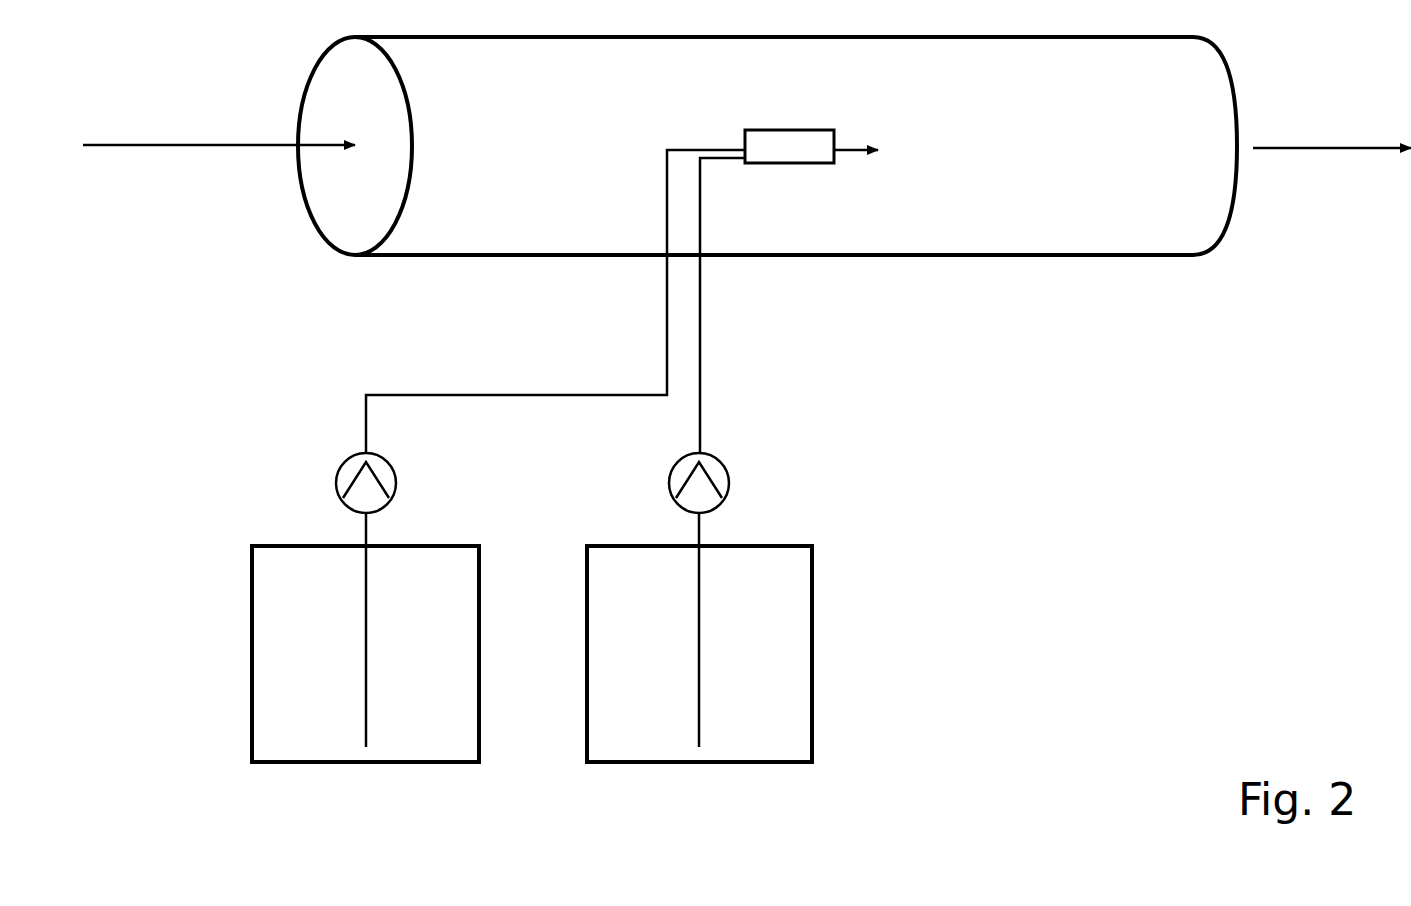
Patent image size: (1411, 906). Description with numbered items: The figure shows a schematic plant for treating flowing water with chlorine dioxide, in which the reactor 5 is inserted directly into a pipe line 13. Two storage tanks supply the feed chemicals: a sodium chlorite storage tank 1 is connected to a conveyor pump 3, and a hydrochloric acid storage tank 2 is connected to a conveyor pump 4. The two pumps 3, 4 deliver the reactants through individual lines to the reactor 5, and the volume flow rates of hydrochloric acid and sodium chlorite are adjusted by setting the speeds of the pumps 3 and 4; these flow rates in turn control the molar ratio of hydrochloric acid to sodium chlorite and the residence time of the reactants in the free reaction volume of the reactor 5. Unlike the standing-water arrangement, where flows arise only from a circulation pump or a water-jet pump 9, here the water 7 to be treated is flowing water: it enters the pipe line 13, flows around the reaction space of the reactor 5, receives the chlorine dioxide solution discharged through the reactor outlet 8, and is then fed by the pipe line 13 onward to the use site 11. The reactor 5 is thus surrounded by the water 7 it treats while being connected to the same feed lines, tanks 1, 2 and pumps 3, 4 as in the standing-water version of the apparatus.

The sodium chlorite storage tank 1 is at (352, 637).
The hydrochloric acid storage tank 2 is at (681, 637).
The conveyor pump 3 is at (540, 333).
The conveyor pump 4 is at (720, 484).
The reactor 5 is at (751, 305).
The water to be treated 7 is at (789, 127).
The reactor outlet 8 is at (856, 174).
The water-jet pump 9 is at (219, 129).
The use site 11 is at (1332, 126).
The pipe line 13 is at (767, 179).